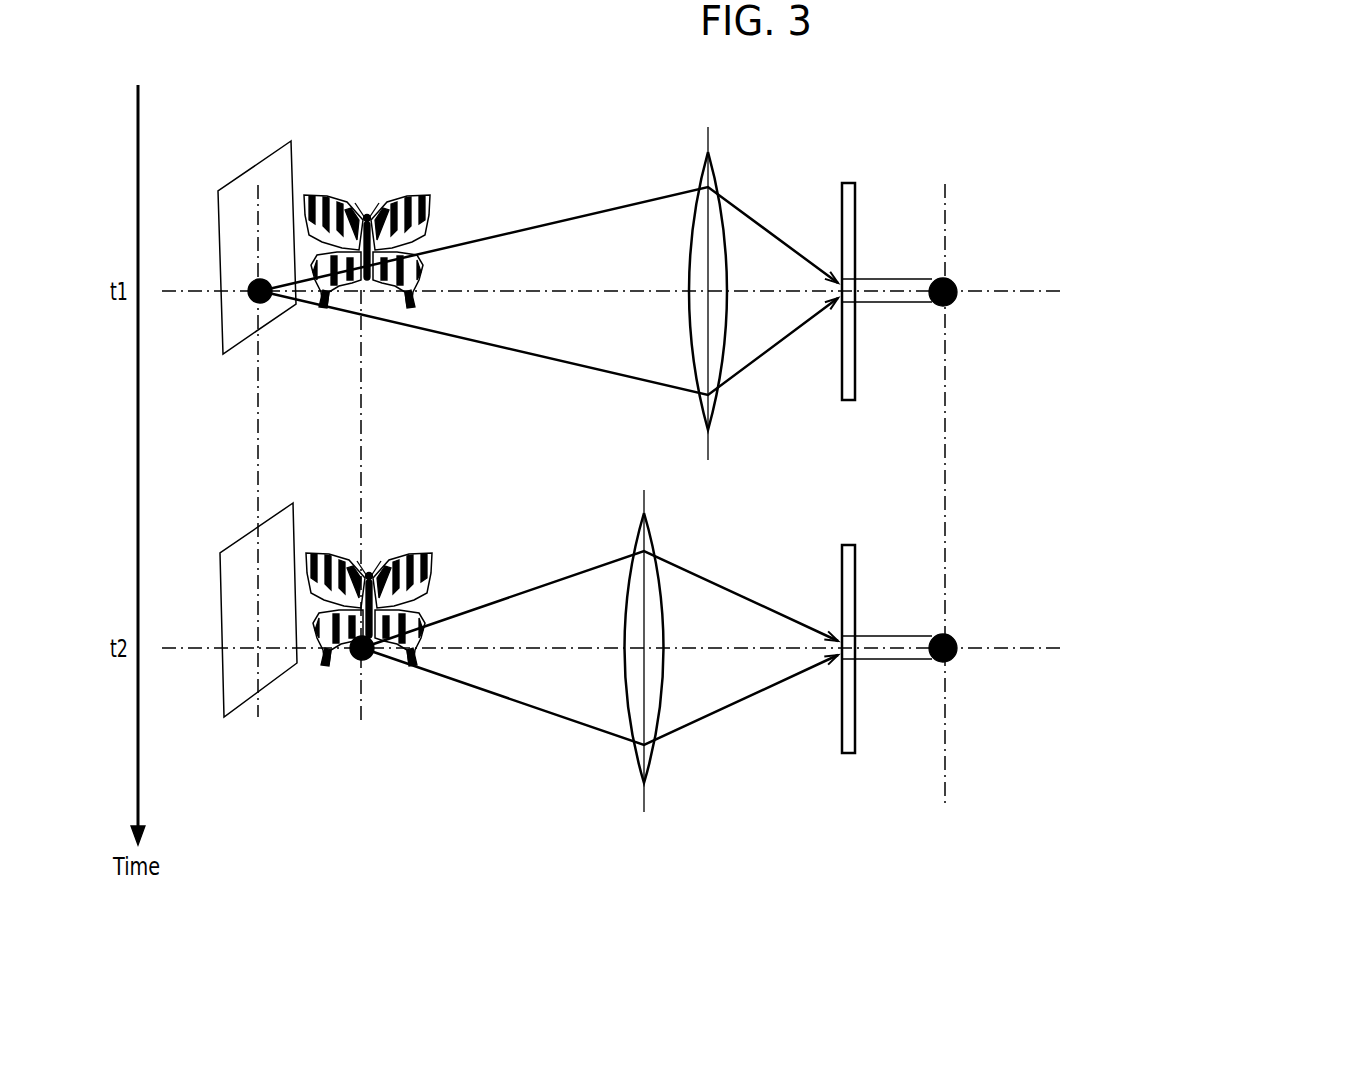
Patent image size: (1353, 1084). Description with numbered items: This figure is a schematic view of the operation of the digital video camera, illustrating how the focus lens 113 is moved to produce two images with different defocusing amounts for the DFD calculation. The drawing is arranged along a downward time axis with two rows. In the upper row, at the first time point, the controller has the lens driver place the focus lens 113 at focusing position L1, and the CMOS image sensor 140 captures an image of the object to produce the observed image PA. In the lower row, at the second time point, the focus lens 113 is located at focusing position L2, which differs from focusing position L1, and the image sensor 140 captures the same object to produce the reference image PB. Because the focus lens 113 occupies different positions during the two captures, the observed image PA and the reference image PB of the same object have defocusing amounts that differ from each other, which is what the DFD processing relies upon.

The focus lens 113 is at (685, 463).
The CMOS image sensor 140 is at (851, 183).
The focusing position L1 is at (708, 310).
The focusing position L2 is at (643, 667).
The observed image PA is at (1098, 289).
The reference image PB is at (1102, 646).